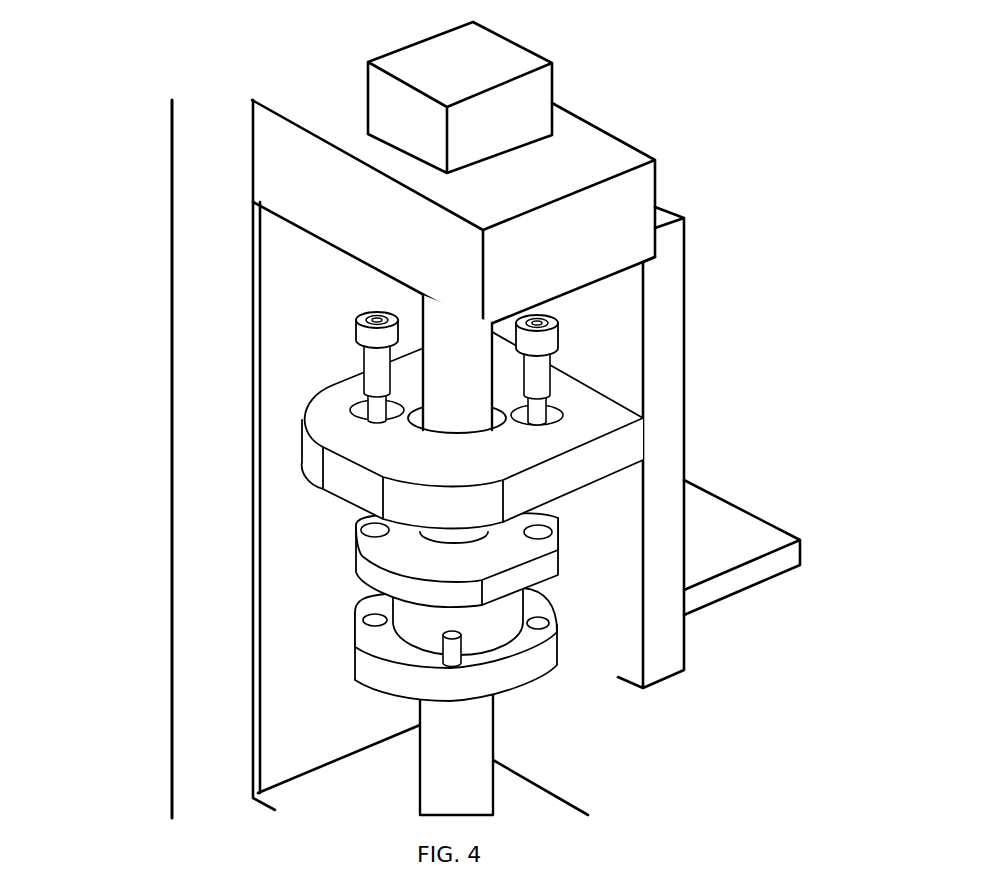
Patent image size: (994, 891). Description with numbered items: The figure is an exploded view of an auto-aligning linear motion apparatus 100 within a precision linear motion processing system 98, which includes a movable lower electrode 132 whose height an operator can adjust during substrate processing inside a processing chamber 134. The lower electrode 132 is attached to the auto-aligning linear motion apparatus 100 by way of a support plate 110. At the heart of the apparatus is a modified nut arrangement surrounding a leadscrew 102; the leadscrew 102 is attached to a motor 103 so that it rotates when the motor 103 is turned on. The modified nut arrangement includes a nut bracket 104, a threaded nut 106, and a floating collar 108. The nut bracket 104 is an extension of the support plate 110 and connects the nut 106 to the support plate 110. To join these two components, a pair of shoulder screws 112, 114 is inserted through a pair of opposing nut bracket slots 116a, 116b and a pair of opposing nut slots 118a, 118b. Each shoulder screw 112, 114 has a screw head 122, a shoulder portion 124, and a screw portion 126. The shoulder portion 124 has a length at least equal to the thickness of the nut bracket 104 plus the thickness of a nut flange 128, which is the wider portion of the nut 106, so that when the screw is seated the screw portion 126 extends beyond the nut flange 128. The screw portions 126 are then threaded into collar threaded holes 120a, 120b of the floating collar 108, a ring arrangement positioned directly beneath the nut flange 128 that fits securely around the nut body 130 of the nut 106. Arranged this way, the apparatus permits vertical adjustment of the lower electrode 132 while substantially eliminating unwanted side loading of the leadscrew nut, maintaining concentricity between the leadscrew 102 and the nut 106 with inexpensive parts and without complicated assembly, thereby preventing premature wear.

The processing system 98 is at (732, 64).
The auto-aligning linear motion apparatus 100 is at (113, 234).
The leadscrew 102 is at (466, 758).
The motor 103 is at (556, 86).
The nut bracket 104 is at (455, 426).
The nut 106 is at (449, 560).
The floating collar 108 is at (447, 644).
The support plate 110 is at (686, 406).
The shoulder screw 112 is at (339, 365).
The shoulder screw 114 is at (560, 322).
The nut bracket slot 116a is at (350, 412).
The nut bracket slot 116b is at (564, 413).
The nut slot 118a is at (361, 530).
The nut slot 118b is at (552, 532).
The collar threaded hole 120a is at (362, 620).
The collar threaded hole 120b is at (548, 621).
The screw head 122 is at (355, 298).
The shoulder portion 124 is at (364, 368).
The screw portion 126 is at (320, 467).
The nut flange 128 is at (458, 598).
The nut body 130 is at (502, 629).
The lower electrode 132 is at (748, 514).
The processing chamber 134 is at (716, 660).